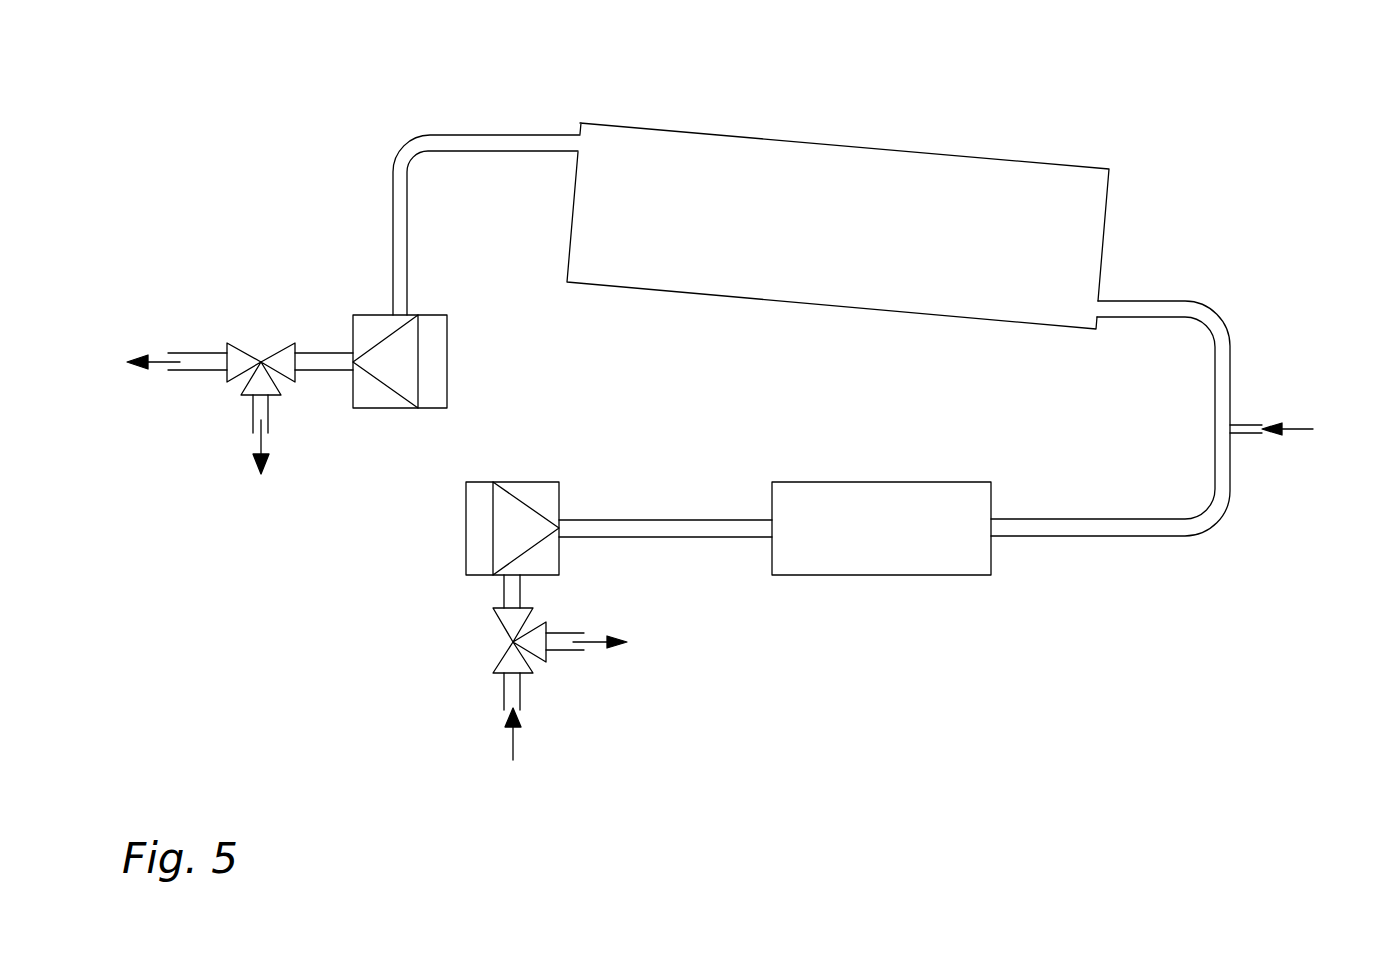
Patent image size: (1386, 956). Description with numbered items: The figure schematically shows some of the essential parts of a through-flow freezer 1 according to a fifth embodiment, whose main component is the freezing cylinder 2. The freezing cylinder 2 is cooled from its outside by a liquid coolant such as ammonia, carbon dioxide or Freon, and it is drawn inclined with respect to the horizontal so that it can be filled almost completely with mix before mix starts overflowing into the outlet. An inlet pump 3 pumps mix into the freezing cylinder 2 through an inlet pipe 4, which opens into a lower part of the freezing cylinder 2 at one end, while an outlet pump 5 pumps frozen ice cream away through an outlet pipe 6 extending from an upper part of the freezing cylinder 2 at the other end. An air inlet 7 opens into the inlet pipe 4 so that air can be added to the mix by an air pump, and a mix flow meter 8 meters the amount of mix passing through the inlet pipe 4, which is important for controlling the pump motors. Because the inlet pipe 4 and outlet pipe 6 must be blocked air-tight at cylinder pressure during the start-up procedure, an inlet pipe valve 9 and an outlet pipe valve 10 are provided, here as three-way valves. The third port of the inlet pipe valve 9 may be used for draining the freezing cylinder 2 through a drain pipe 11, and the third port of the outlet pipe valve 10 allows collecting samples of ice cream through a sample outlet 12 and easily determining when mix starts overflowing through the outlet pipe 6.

The through-flow freezer 1 is at (1280, 126).
The freezing cylinder 2 is at (940, 188).
The inlet pump 3 is at (525, 540).
The inlet pipe 4 is at (1127, 530).
The outlet pump 5 is at (380, 318).
The outlet pipe 6 is at (398, 190).
The air inlet 7 is at (1257, 422).
The mix flow meter 8 is at (915, 548).
The inlet pipe valve 9 is at (512, 640).
The outlet pipe valve 10 is at (261, 360).
The drain pipe 11 is at (576, 648).
The sample outlet 12 is at (263, 425).